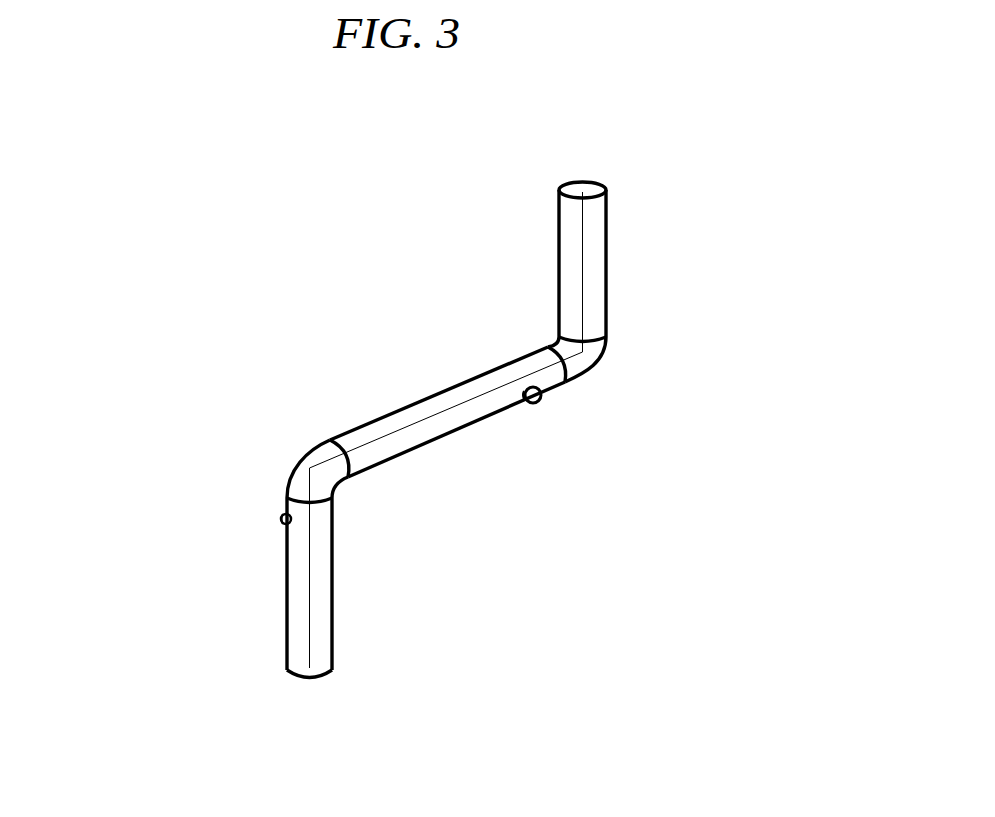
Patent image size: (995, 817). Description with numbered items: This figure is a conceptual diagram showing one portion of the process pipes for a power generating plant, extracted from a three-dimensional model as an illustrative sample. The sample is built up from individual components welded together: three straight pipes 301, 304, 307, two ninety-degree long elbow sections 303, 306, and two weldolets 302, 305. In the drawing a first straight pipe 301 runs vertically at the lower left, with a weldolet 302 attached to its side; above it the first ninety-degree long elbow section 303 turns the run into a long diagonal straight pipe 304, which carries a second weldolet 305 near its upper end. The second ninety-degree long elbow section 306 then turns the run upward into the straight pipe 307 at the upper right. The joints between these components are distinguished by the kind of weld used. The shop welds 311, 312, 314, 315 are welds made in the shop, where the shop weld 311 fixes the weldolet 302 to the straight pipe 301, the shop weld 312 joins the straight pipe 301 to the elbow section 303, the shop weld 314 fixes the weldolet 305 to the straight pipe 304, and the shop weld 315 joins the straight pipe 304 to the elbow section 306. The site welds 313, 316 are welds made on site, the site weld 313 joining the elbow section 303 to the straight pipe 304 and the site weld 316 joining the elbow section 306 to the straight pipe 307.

The straight pipe 301 is at (335, 648).
The weldolet 302 is at (283, 518).
The 90-degree long elbow section 303 is at (340, 485).
The straight pipe 304 is at (397, 455).
The weldolet 305 is at (538, 402).
The 90-degree long elbow section 306 is at (592, 424).
The straight pipe 307 is at (607, 268).
The shop weld 311 is at (283, 520).
The shop weld 312 is at (286, 490).
The site weld 313 is at (331, 442).
The shop weld 314 is at (530, 394).
The shop weld 315 is at (546, 350).
The site weld 316 is at (561, 332).